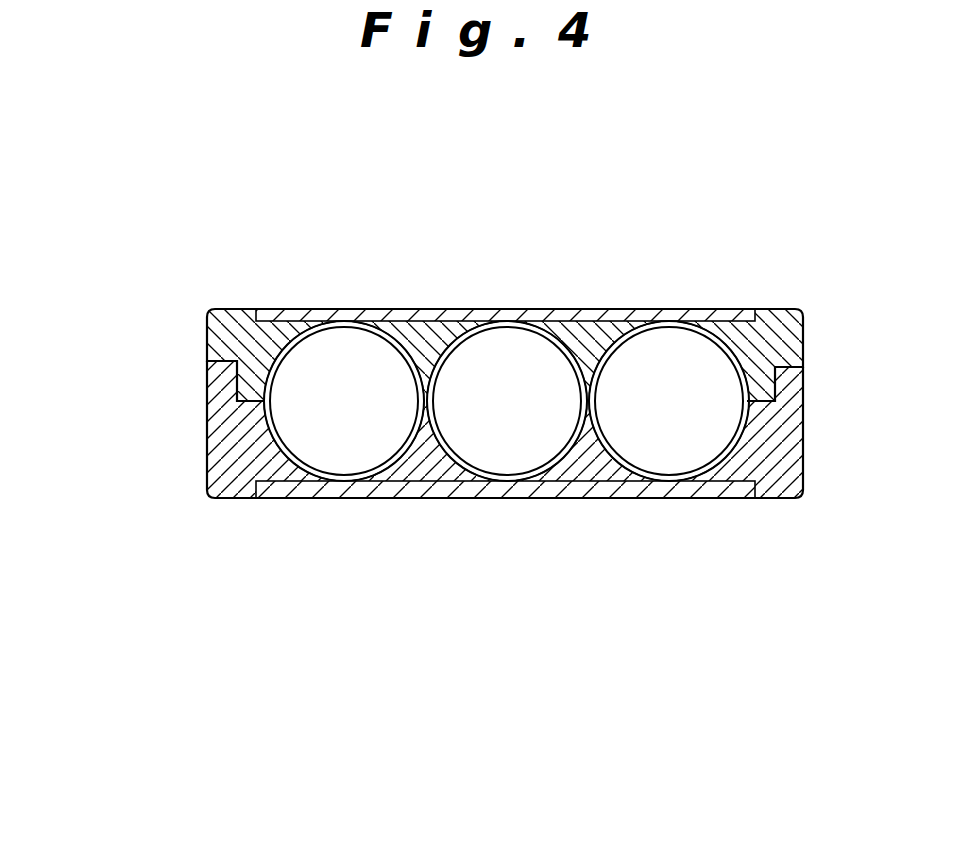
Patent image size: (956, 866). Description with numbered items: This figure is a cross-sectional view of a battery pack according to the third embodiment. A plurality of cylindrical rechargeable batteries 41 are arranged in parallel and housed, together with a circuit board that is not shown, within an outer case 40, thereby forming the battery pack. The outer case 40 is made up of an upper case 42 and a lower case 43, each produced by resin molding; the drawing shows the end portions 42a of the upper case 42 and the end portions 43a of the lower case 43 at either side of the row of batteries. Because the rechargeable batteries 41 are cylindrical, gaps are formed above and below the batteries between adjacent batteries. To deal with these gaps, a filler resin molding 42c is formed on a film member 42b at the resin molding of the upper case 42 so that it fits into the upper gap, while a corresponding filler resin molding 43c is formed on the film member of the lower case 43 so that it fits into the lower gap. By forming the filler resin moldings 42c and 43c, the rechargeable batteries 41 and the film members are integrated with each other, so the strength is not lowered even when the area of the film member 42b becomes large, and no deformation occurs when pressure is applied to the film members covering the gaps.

The outer case 40 is at (97, 285).
The cylindrical rechargeable battery 41 is at (345, 438).
The upper case 42 is at (195, 325).
The end portion of upper housing member 42a is at (235, 308).
The film member 42b is at (507, 312).
The filler resin molding 42c is at (417, 335).
The lower case 43 is at (195, 472).
The end portion of lower housing member 43a is at (212, 498).
The filler resin molding 43c is at (425, 498).